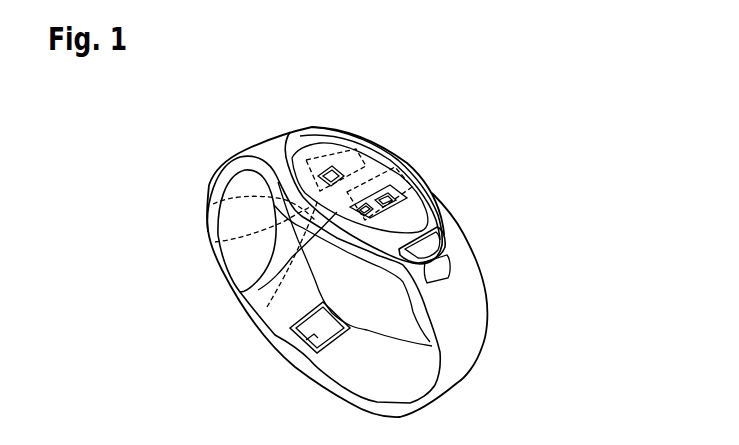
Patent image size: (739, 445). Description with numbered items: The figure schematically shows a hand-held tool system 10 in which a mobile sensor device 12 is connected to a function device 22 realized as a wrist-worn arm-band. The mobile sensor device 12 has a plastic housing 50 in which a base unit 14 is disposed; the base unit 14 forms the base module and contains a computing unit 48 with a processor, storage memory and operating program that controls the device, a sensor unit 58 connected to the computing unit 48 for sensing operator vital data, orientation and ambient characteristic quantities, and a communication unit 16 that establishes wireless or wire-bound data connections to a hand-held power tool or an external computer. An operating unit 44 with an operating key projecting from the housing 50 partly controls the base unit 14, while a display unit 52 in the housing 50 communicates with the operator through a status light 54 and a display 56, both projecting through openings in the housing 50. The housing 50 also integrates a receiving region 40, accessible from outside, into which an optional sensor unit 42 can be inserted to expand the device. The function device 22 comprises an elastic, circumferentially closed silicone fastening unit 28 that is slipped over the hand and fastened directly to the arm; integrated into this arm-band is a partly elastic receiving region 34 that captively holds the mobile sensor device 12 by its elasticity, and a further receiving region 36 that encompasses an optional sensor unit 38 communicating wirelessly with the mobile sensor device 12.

The hand-held tool system 10 is at (500, 157).
The mobile sensor device 12 is at (337, 122).
The base unit 14 is at (432, 185).
The communication unit 16 is at (424, 186).
The function device 22 is at (505, 297).
The fastening unit 28 is at (470, 314).
The receiving region 34 is at (294, 175).
The receiving region 36 is at (290, 340).
The optional sensor unit 38 is at (300, 368).
The receiving region 40 is at (377, 147).
The optional sensor unit 42 is at (213, 204).
The operating unit 44 is at (446, 237).
The computing unit 48 is at (215, 242).
The housing 50 is at (247, 291).
The display unit 52 is at (288, 140).
The status light 54 is at (313, 153).
The display 56 is at (383, 167).
The sensor unit 58 is at (262, 313).